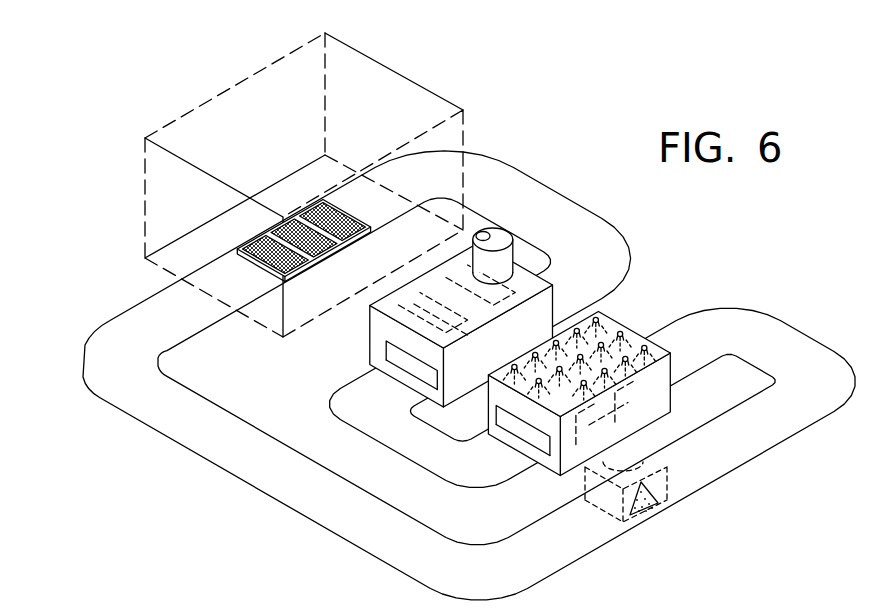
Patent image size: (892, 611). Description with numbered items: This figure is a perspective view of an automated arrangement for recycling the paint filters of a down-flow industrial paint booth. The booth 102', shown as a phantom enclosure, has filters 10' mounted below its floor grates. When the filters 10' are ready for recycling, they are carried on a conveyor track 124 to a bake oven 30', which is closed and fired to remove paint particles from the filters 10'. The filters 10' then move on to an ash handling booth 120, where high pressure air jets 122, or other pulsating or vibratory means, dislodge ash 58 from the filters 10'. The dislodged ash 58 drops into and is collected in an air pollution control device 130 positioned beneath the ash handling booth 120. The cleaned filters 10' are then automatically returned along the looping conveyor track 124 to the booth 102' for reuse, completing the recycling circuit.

The conveyor track 124 is at (300, 513).
The booth 102' is at (307, 185).
The filters 10' is at (316, 247).
The bake oven 30' is at (431, 317).
The ash handling booth 120 is at (626, 328).
The high pressure air jets 122 is at (603, 340).
The air pollution control device 130 is at (667, 472).
The ash 58 is at (652, 488).